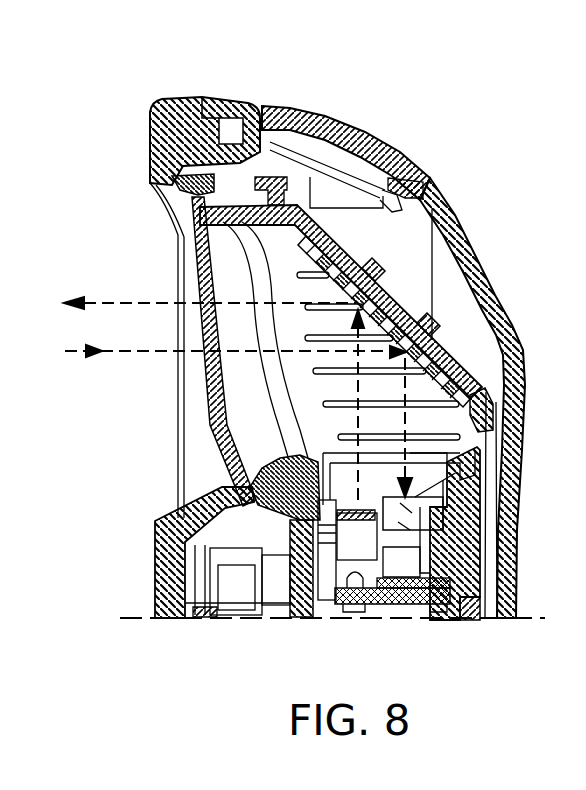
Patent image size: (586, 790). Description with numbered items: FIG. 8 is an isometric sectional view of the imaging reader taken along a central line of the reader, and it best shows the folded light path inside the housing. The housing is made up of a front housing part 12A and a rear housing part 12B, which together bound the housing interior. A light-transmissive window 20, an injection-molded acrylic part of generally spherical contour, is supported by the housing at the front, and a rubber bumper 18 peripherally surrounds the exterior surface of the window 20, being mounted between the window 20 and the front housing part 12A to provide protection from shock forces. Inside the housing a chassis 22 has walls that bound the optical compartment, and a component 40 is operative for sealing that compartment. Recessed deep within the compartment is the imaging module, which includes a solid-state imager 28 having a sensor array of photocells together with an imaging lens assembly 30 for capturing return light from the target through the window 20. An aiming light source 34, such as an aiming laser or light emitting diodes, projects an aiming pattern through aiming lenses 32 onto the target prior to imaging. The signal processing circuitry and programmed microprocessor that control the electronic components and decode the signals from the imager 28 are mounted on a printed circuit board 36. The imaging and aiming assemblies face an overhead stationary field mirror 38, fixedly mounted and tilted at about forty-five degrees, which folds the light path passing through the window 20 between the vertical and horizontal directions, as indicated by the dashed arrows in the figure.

The front housing part 12A is at (150, 112).
The rear housing part 12B is at (466, 224).
The rubber bumper 18 is at (149, 178).
The light-transmissive window 20 is at (205, 395).
The chassis 22 is at (432, 343).
The solid-state imager 28 is at (452, 610).
The imaging lens assembly 30 is at (488, 457).
The aiming lenses 32 is at (380, 512).
The aiming light source 34 is at (393, 604).
The printed circuit board 36 is at (303, 618).
The field mirror 38 is at (487, 388).
The sealing component 40 is at (283, 120).